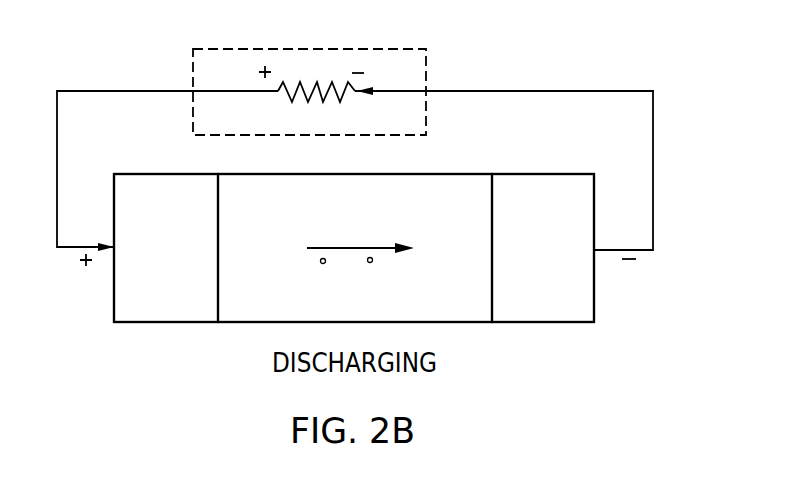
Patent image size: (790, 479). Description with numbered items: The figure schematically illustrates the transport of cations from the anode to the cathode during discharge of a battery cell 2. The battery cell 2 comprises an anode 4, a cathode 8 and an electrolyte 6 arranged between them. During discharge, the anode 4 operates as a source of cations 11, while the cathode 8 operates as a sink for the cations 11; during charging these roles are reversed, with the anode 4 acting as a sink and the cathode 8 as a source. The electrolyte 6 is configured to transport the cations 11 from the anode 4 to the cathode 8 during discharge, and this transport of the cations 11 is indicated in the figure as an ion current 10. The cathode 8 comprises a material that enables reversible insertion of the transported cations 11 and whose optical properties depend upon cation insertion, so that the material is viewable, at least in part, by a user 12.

The battery cell 2 is at (558, 352).
The anode 4 is at (165, 322).
The electrolyte 6 is at (447, 322).
The cathode 8 is at (533, 174).
The ion current 10 is at (336, 247).
The cations 11 is at (325, 262).
The user 12 is at (426, 55).